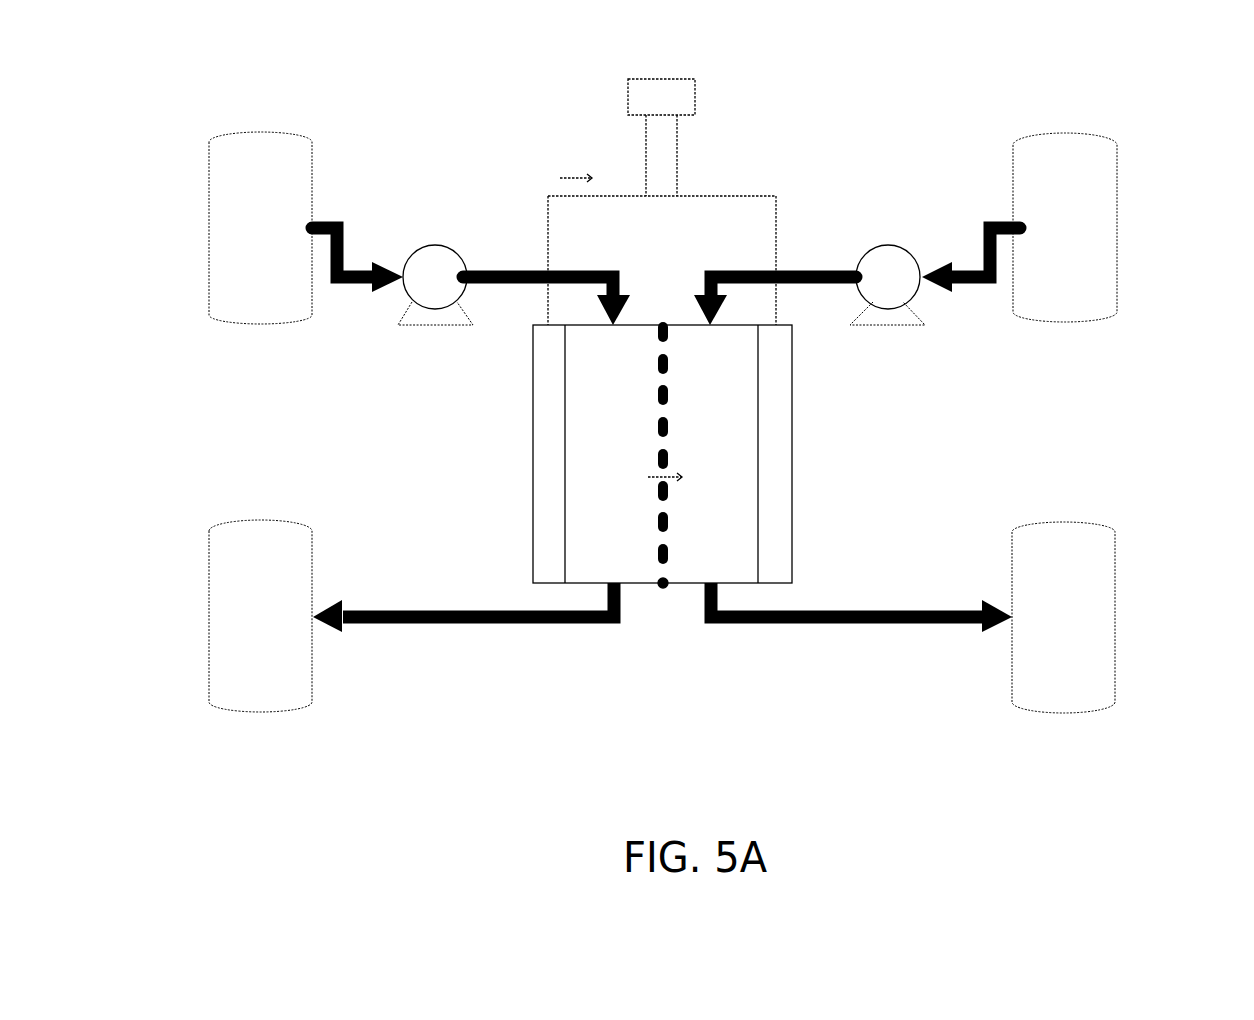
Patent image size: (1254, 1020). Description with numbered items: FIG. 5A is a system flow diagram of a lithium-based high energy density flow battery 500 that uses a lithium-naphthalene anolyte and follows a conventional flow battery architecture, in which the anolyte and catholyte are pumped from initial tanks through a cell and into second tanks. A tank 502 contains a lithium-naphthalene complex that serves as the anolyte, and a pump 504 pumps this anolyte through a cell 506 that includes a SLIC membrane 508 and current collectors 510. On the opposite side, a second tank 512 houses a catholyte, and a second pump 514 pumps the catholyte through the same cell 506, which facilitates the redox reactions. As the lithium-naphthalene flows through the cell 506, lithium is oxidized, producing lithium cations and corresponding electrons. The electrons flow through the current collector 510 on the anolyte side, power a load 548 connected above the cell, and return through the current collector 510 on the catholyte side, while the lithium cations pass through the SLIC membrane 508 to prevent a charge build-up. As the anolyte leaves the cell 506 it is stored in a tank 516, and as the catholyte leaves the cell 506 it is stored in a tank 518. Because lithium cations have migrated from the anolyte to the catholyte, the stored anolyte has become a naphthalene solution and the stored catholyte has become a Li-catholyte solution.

The electrochemical flow cell system 500 is at (920, 130).
The tank 502 is at (210, 228).
The pump 504 is at (435, 325).
The cell 506 is at (502, 453).
The SLIC membrane 508 is at (662, 600).
The current collectors 510 is at (533, 552).
The second tank 512 is at (1117, 230).
The second pump 514 is at (888, 325).
The tank 516 is at (210, 612).
The tank 518 is at (1115, 617).
The load 548 is at (697, 100).